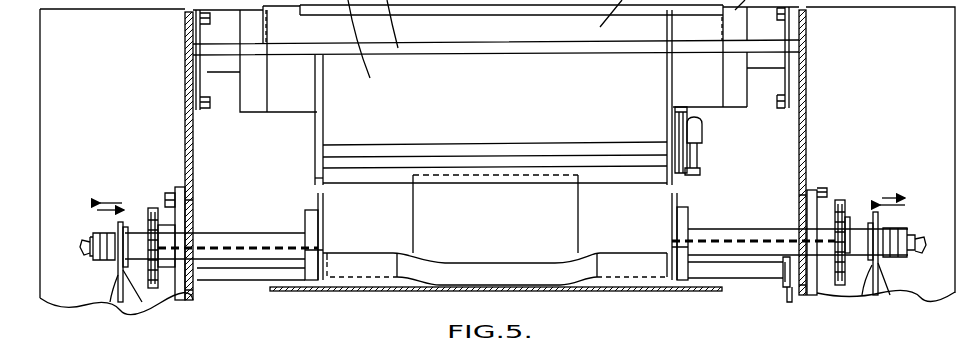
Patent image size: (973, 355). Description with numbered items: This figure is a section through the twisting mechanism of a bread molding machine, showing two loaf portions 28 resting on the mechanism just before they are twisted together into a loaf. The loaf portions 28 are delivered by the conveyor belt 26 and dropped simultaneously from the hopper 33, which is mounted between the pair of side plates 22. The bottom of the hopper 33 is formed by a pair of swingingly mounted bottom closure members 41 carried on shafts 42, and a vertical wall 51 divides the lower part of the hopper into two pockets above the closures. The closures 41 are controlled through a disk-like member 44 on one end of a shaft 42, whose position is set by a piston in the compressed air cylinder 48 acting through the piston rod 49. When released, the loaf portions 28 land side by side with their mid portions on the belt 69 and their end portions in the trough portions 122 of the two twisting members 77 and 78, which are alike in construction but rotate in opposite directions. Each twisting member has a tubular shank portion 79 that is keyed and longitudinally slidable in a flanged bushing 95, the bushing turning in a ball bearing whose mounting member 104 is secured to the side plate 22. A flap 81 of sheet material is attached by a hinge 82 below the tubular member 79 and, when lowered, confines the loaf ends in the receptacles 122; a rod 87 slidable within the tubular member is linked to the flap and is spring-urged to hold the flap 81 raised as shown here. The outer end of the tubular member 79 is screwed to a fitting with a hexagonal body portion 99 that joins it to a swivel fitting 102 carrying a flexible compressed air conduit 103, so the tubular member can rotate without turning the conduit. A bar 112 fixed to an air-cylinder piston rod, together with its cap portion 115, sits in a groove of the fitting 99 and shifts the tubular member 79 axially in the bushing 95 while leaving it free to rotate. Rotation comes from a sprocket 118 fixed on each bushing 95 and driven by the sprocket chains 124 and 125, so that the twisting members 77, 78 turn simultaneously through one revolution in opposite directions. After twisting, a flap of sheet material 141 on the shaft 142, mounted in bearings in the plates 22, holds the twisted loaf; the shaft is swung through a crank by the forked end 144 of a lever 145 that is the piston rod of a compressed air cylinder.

The side plates 22 is at (193, 157).
The conveyor belt 26 is at (288, 103).
The loaf portions 28 is at (445, 275).
The hopper 33 is at (665, 82).
The bottom closure members 41 is at (542, 160).
The shafts 42 is at (405, 150).
The disk-like member 44 is at (682, 173).
The compressed air cylinder 48 is at (700, 135).
The piston rod 49 is at (697, 158).
The vertical wall 51 is at (323, 178).
The belt 69 is at (563, 290).
The twisting member 77 is at (684, 230).
The twisting member 78 is at (310, 218).
The tubular shank portion 79 is at (238, 238).
The flap 81 is at (325, 223).
The hinge 82 is at (325, 252).
The rod 87 is at (253, 212).
The flanged bushing 95 is at (173, 228).
The hexagonal body portion 99 is at (128, 288).
The swivel fitting 102 is at (96, 238).
The flexible compressed air conduit 103 is at (85, 258).
The mounting member 104 is at (183, 200).
The bar 112 is at (122, 288).
The cap portion 115 is at (118, 228).
The sprocket 118 is at (160, 290).
The trough portions 122 is at (348, 270).
The sprocket chain 124 is at (843, 200).
The sprocket chain 125 is at (111, 193).
The flap of sheet material 141 is at (565, 222).
The shaft 142 is at (237, 276).
The forked end 144 is at (782, 280).
The lever 145 is at (786, 300).